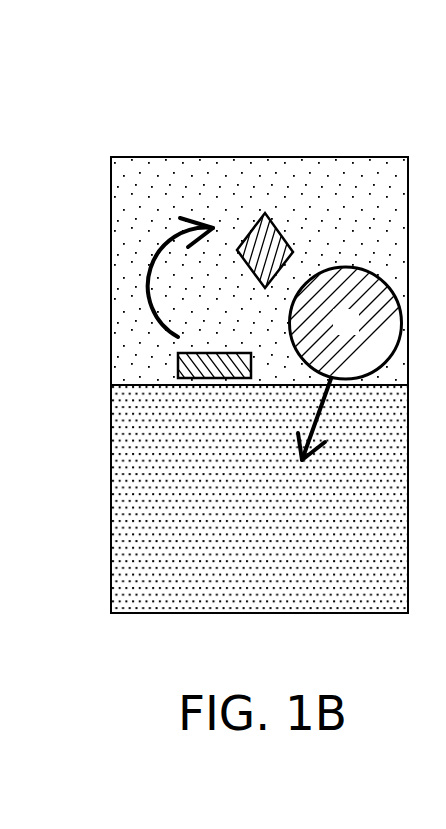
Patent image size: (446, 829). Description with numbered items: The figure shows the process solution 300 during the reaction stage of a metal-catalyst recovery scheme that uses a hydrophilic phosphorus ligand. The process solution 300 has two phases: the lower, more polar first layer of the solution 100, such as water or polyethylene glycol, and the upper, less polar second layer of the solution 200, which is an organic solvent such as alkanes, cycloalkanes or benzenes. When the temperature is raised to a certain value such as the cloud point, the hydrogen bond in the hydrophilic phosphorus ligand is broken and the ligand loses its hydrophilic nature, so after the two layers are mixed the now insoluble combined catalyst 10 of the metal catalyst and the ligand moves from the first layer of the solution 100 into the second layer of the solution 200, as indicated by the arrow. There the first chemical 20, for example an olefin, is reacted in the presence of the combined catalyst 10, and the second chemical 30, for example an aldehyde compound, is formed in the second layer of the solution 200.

The process solution 300 is at (98, 111).
The second layer of the solution 200 is at (111, 276).
The first layer of the solution 100 is at (111, 485).
The combined catalyst 10 is at (329, 328).
The first chemical 20 is at (214, 352).
The second chemical 30 is at (280, 232).